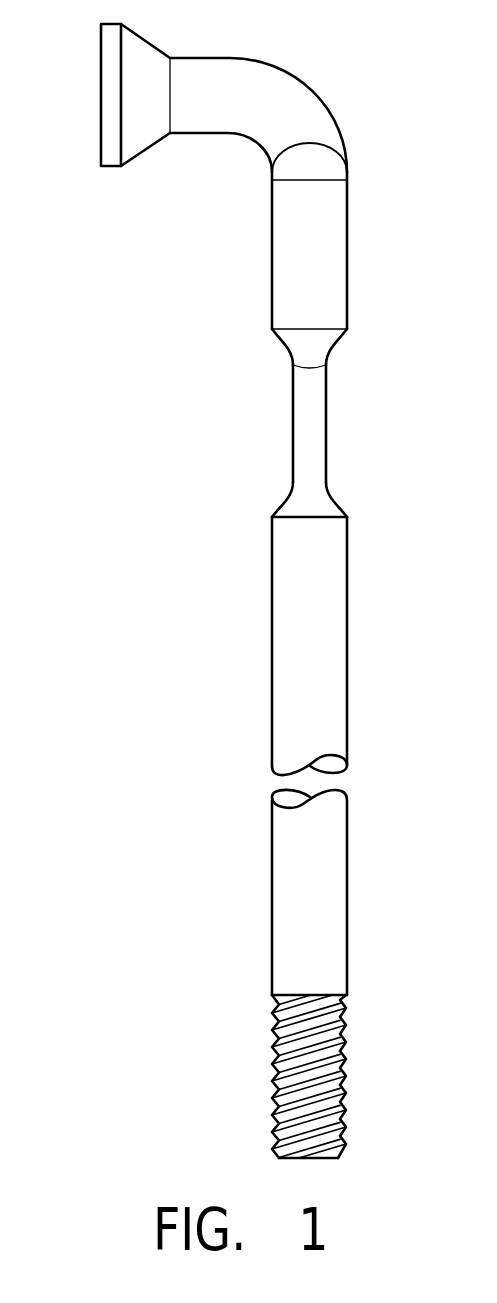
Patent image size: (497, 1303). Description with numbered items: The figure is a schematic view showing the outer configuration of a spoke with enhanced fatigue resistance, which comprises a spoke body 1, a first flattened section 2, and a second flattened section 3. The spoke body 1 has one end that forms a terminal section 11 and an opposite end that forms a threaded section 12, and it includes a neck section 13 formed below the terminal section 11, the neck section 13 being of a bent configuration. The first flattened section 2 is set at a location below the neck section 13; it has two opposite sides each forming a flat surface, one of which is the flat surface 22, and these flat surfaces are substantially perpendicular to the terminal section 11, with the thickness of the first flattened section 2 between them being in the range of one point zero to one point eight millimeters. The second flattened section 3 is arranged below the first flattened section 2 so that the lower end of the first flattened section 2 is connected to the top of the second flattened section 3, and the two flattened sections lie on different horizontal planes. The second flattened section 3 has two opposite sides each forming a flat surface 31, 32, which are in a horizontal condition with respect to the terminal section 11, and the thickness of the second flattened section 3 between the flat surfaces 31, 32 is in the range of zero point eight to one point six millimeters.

The spoke body 1 is at (272, 645).
The terminal section 11 is at (112, 104).
The threaded section 12 is at (288, 1072).
The neck section 13 is at (230, 78).
The first flattened section 2 is at (282, 254).
The flat surface 22 is at (328, 236).
The second flattened section 3 is at (313, 441).
The flat surface 31 is at (293, 430).
The flat surface 32 is at (327, 466).